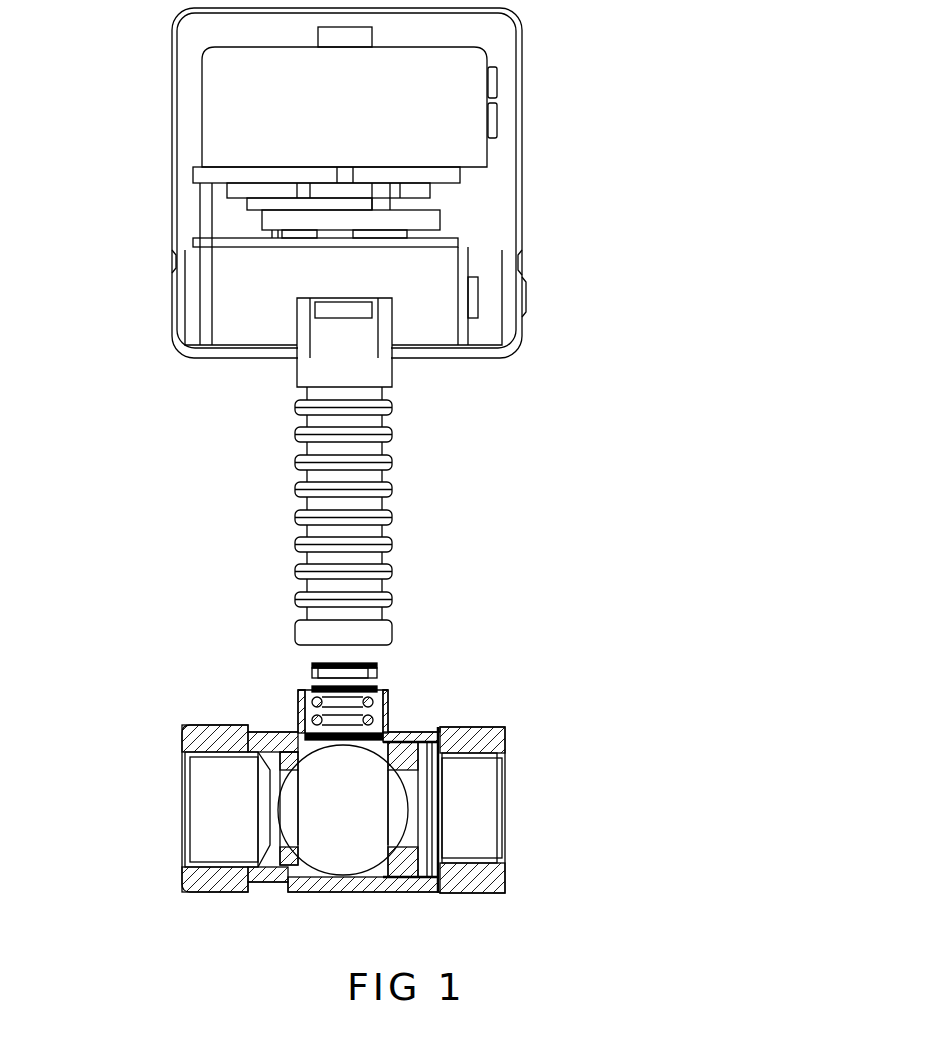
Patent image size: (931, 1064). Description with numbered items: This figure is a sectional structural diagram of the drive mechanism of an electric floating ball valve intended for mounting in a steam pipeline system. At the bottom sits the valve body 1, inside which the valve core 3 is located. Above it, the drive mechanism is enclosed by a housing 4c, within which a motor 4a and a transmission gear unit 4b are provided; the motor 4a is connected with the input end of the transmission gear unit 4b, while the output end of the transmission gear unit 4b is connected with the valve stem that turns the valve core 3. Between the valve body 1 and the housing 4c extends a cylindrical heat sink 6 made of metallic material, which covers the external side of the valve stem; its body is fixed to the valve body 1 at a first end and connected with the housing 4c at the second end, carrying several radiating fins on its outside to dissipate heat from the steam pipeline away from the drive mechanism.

The valve body 1 is at (458, 742).
The valve core 3 is at (323, 763).
The motor 4a is at (388, 105).
The transmission gear unit 4b is at (408, 222).
The housing 4c is at (510, 317).
The heat sink 6 is at (387, 407).